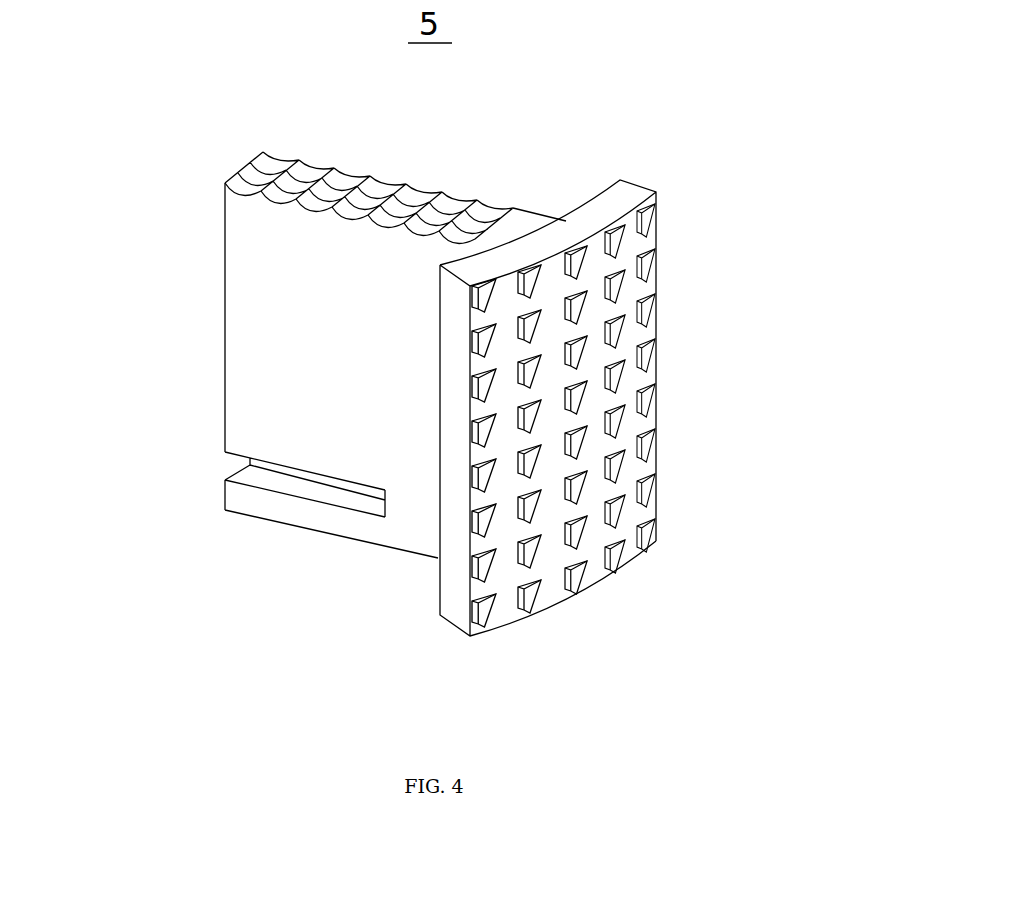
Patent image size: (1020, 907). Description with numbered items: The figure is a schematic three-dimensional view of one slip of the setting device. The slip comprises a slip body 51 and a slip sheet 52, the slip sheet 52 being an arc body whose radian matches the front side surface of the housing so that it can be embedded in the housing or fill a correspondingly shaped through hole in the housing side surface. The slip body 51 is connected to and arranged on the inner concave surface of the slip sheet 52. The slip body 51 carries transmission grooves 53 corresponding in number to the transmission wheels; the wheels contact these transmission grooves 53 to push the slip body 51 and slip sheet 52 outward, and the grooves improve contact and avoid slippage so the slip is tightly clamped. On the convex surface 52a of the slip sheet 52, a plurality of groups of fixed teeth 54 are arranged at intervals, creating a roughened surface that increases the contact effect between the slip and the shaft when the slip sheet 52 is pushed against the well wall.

The slip body 51 is at (265, 317).
The slip sheet 52 is at (618, 207).
The convex surface 52a is at (552, 592).
The transmission grooves 53 is at (305, 158).
The fixed teeth 54 is at (650, 350).